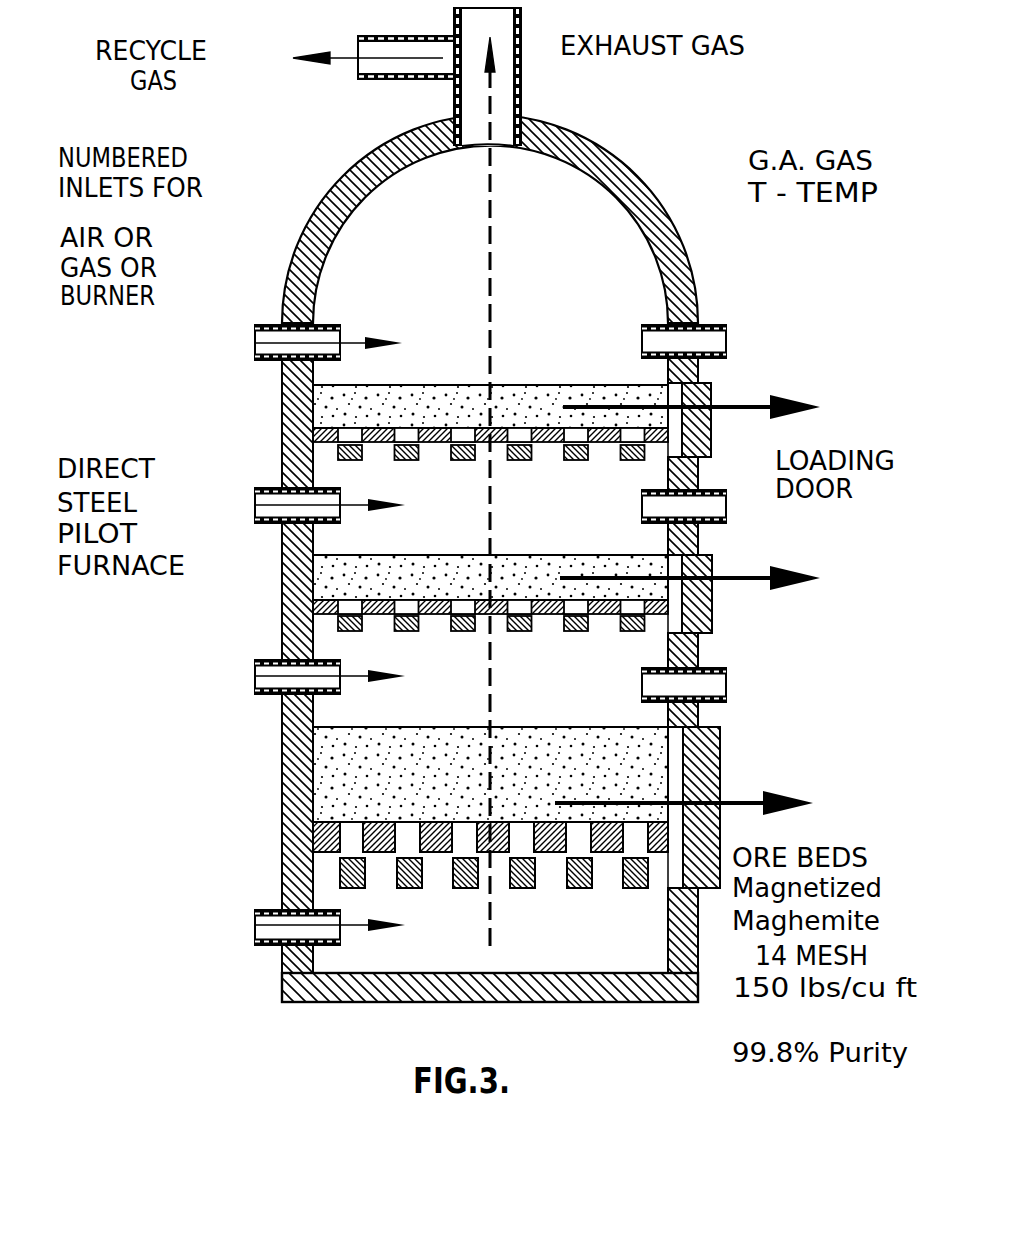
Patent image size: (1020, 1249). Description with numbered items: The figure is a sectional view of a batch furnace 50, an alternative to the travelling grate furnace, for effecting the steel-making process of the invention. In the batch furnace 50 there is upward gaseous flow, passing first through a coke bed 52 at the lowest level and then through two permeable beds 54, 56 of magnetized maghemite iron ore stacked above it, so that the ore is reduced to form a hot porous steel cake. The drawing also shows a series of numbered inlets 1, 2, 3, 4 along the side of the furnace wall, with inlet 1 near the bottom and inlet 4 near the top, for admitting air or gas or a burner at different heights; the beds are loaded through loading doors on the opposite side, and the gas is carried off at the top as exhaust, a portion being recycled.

The batch furnace 50 is at (693, 158).
The numbered inlet 1 is at (255, 925).
The numbered inlet 2 is at (255, 676).
The numbered inlet 3 is at (255, 505).
The numbered inlet 4 is at (255, 343).
The coke bed 52 is at (652, 757).
The permeable bed of magnetized maghemite iron ore 54 is at (658, 563).
The permeable bed of magnetized maghemite iron ore 56 is at (657, 397).